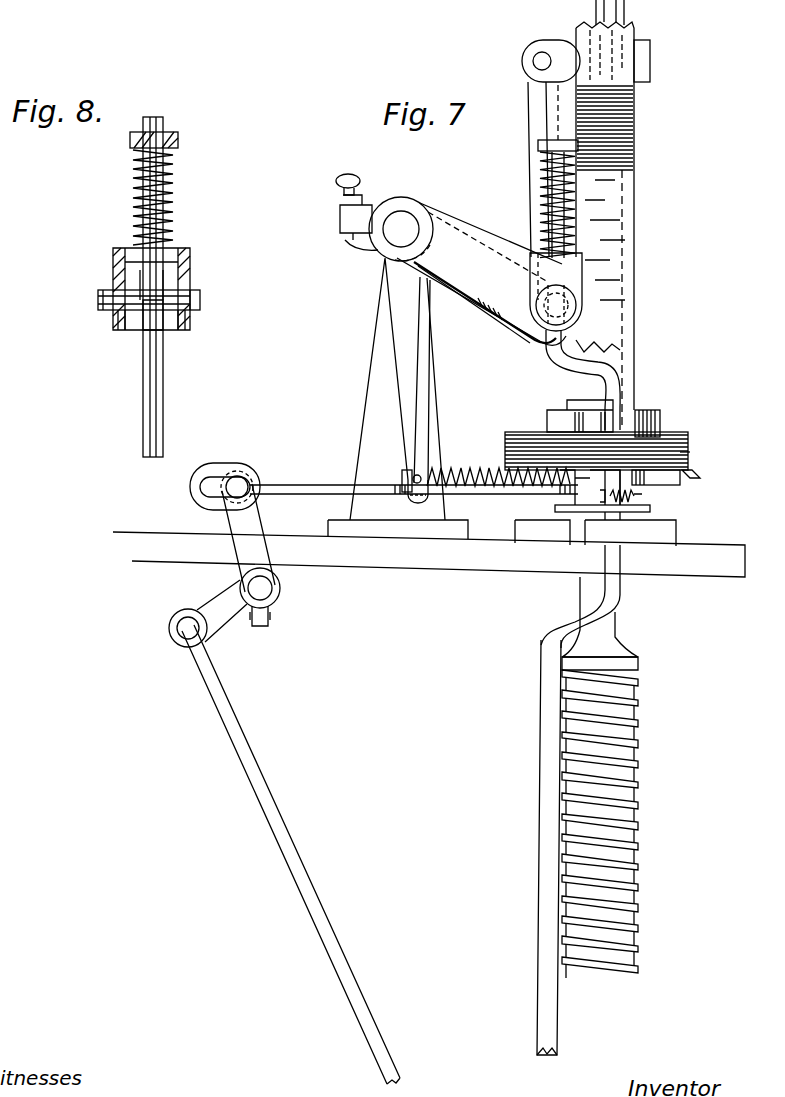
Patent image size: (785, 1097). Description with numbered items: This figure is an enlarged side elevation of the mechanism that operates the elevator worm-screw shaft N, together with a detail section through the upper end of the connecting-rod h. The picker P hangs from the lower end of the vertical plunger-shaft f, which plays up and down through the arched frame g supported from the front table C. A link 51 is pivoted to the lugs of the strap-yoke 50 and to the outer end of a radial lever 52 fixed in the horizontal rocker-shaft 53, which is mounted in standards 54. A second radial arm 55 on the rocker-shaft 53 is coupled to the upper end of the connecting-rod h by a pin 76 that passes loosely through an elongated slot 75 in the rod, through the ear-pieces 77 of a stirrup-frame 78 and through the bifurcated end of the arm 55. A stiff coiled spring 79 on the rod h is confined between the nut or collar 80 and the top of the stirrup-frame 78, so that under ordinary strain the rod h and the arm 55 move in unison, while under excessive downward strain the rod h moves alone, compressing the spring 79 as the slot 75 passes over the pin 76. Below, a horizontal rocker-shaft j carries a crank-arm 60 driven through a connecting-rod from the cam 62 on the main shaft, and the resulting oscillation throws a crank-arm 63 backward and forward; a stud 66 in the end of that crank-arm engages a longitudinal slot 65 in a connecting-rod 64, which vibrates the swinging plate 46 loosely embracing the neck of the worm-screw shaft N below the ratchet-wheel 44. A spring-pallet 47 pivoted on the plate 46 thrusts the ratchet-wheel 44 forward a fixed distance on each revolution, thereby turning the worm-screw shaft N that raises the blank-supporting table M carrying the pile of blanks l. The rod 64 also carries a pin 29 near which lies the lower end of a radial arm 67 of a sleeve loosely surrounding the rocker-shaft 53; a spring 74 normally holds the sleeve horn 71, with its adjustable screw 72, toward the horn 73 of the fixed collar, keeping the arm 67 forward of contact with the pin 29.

In FIG. 8, the nut or collar 80 is at (169, 140).
In FIG. 7, the nut or collar 80 is at (538, 146).
In FIG. 8, the coiled spring 79 is at (173, 194).
In FIG. 7, the coiled spring 79 is at (540, 212).
In FIG. 8, the stirrup-frame 78 is at (190, 254).
In FIG. 7, the stirrup-frame 78 is at (582, 268).
In FIG. 8, the ear-pieces 77 is at (113, 322).
In FIG. 8, the pin 76 is at (200, 298).
In FIG. 7, the pin 76 is at (578, 311).
In FIG. 8, the elongated slot 75 is at (150, 318).
In FIG. 7, the elongated slot 75 is at (565, 296).
In FIG. 7, the strap-yoke 50 is at (551, 61).
In FIG. 7, the link 51 is at (530, 125).
In FIG. 7, the rocker-shaft 53 is at (401, 229).
In FIG. 7, the radial arm 55 is at (481, 274).
In FIG. 7, the radial lever 52 is at (522, 334).
In FIG. 7, the screw 72 is at (334, 183).
In FIG. 7, the horn 71 is at (340, 216).
In FIG. 7, the horn 73 is at (360, 250).
In FIG. 7, the standards 54 is at (397, 389).
In FIG. 7, the radial arm 67 is at (415, 390).
In FIG. 7, the pin 29 is at (400, 478).
In FIG. 7, the spring 74 is at (498, 467).
In FIG. 7, the connecting-rod 64 is at (414, 481).
In FIG. 7, the longitudinal slot 65 is at (205, 487).
In FIG. 7, the stud 66 is at (244, 478).
In FIG. 7, the crank-arm 63 is at (248, 538).
In FIG. 7, the crank-arm 60 is at (208, 613).
In FIG. 7, the cam 62 is at (291, 854).
In FIG. 7, the swinging plate 46 is at (555, 510).
In FIG. 7, the spring-pallet 47 is at (640, 500).
In FIG. 7, the ratchet-wheel 44 is at (656, 477).
In FIG. 7, the arched frame g is at (621, 221).
In FIG. 7, the plunger-shaft f is at (592, 12).
In FIG. 7, the connecting-rod h is at (540, 181).
In FIG. 7, the rocker-shaft j is at (273, 588).
In FIG. 7, the front table C is at (429, 554).
In FIG. 7, the picker P is at (660, 418).
In FIG. 7, the blank-supporting table M is at (695, 478).
In FIG. 7, the pile of blanks l is at (690, 450).
In FIG. 7, the worm-screw shaft N is at (606, 777).